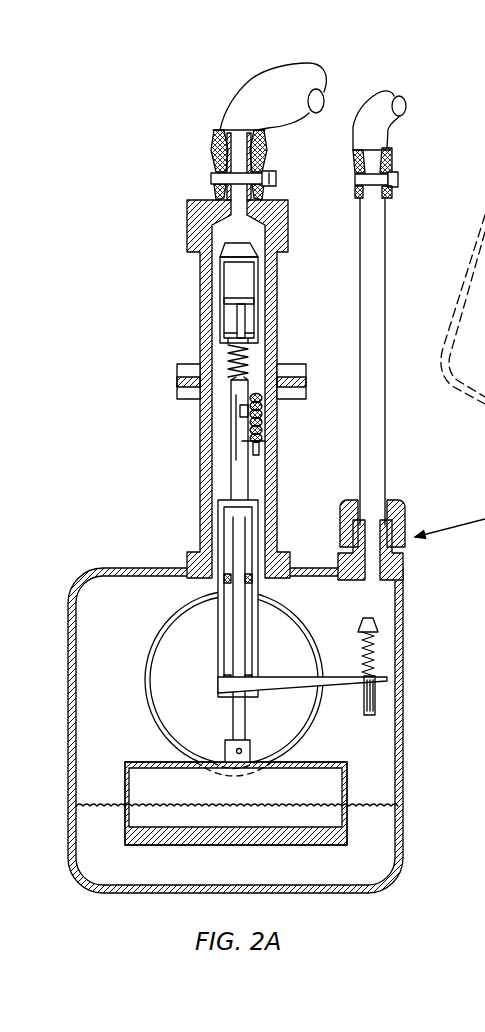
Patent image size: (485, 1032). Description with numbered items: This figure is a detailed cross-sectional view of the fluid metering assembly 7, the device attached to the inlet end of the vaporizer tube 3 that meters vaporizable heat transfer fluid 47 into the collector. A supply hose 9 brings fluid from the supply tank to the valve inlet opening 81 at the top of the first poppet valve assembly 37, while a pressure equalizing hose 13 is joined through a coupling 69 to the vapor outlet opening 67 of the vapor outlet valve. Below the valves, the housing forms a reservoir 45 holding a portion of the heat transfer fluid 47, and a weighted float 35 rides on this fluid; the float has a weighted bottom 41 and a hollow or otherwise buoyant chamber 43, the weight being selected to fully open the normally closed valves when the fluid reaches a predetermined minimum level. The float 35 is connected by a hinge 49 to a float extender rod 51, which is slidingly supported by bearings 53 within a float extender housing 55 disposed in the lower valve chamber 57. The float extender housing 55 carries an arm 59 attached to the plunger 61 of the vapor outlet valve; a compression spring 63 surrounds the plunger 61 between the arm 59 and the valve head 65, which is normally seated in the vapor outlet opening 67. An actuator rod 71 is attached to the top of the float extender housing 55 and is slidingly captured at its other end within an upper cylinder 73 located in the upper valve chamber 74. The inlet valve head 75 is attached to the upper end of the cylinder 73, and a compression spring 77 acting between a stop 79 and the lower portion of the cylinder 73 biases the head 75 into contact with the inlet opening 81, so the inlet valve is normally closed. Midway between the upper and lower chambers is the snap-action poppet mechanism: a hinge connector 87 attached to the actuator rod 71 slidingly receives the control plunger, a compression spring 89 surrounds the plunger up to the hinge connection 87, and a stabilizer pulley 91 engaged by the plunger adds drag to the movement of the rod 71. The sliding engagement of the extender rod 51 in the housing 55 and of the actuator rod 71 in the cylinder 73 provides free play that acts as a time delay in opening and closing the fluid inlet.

The vaporizer tube 3 is at (150, 650).
The fluid metering assembly 7 is at (458, 293).
The hose 9 is at (288, 65).
The pressure equalizing hose 13 is at (388, 88).
The weighted float 35 is at (185, 855).
The first poppet valve assembly 37 is at (198, 506).
The weighted bottom 41 is at (236, 819).
The buoyant chamber 43 is at (182, 798).
The reservoir 45 is at (449, 851).
The heat transfer fluid 47 is at (264, 730).
The hinge 49 is at (248, 750).
The float extender rod 51 is at (233, 720).
The bearings 53 is at (223, 684).
The float extender housing 55 is at (219, 622).
The lower valve chamber 57 is at (274, 497).
The arm 59 is at (287, 653).
The plunger 61 is at (386, 679).
The compression spring 63 is at (405, 637).
The valve head 65 is at (368, 618).
The vapor outlet opening 67 is at (405, 563).
The coupling 69 is at (405, 510).
The actuator rod 71 is at (239, 323).
The upper cylinder 73 is at (260, 283).
The upper valve chamber 74 is at (200, 303).
The inlet valve head 75 is at (229, 252).
The compression spring 77 is at (200, 360).
The stop 79 is at (247, 372).
The valve inlet opening 81 is at (277, 182).
The hinge connector 87 is at (262, 444).
The compression spring 89 is at (244, 414).
The stabilizer pulley 91 is at (232, 405).